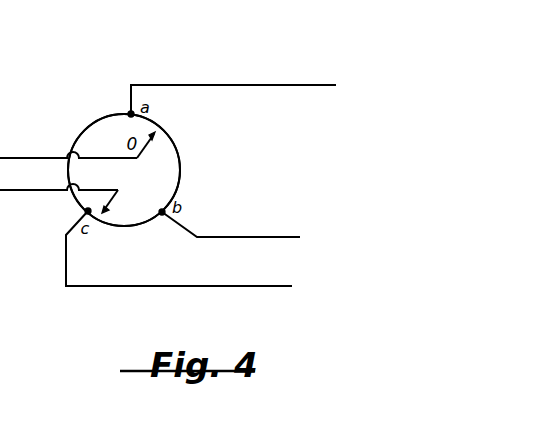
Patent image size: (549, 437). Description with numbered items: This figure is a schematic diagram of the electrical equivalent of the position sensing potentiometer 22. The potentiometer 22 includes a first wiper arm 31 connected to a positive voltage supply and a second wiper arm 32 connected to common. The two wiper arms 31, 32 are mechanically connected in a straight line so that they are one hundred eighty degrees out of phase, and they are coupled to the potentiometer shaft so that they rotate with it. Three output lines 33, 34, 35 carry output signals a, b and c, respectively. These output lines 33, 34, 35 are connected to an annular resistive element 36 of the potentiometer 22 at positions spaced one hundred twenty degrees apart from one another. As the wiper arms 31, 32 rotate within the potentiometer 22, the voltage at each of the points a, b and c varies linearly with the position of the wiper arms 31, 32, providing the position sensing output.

The potentiometer 22 is at (89, 100).
The first wiper arm 31 is at (152, 151).
The second wiper arm 32 is at (118, 200).
The output line 33 is at (265, 85).
The output line 34 is at (260, 237).
The output line 35 is at (260, 286).
The annular resistive element 36 is at (180, 167).